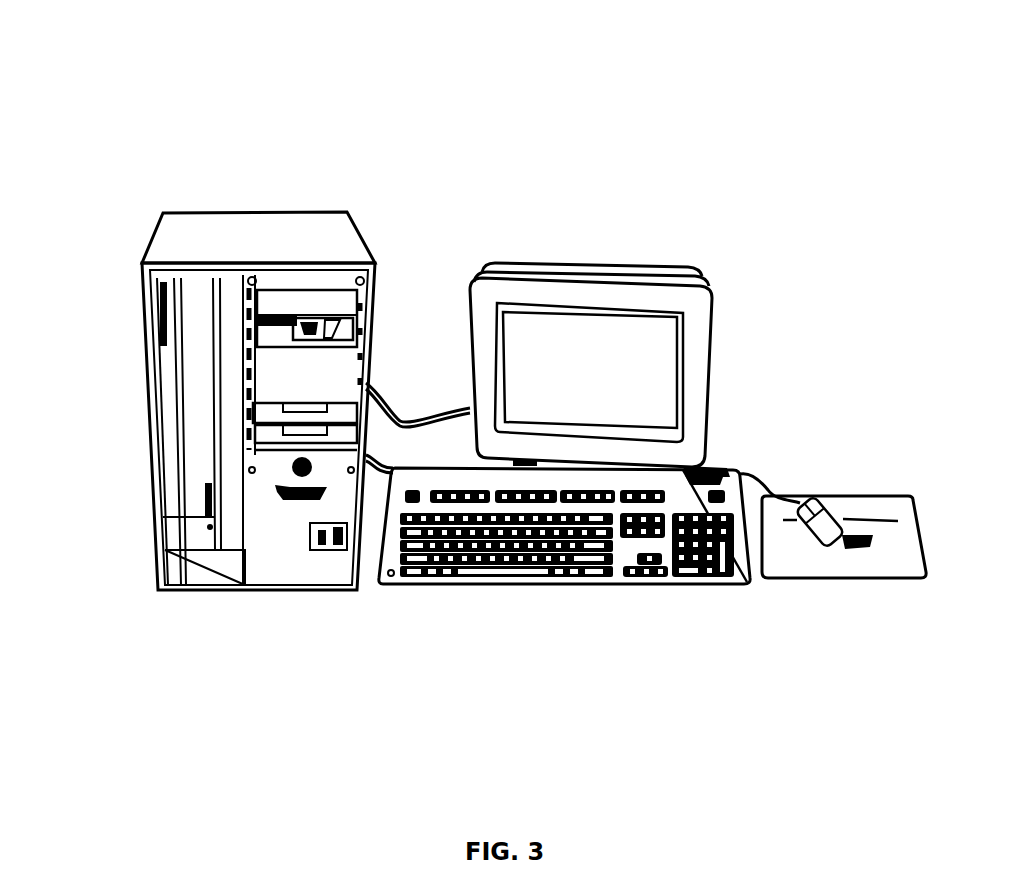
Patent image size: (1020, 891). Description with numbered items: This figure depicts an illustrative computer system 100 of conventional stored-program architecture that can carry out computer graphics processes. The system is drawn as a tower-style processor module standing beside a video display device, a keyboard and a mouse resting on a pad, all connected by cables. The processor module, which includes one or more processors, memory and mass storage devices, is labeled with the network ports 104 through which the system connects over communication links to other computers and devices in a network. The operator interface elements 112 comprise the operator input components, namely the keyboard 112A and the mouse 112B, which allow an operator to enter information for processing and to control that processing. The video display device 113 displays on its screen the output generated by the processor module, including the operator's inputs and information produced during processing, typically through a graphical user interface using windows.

The computer system 100 is at (504, 127).
The network ports 104 is at (148, 421).
The display monitor 113 is at (718, 370).
The input devices 112 is at (740, 637).
The keyboard 112A is at (606, 592).
The mouse and mouse pad 112B is at (908, 583).